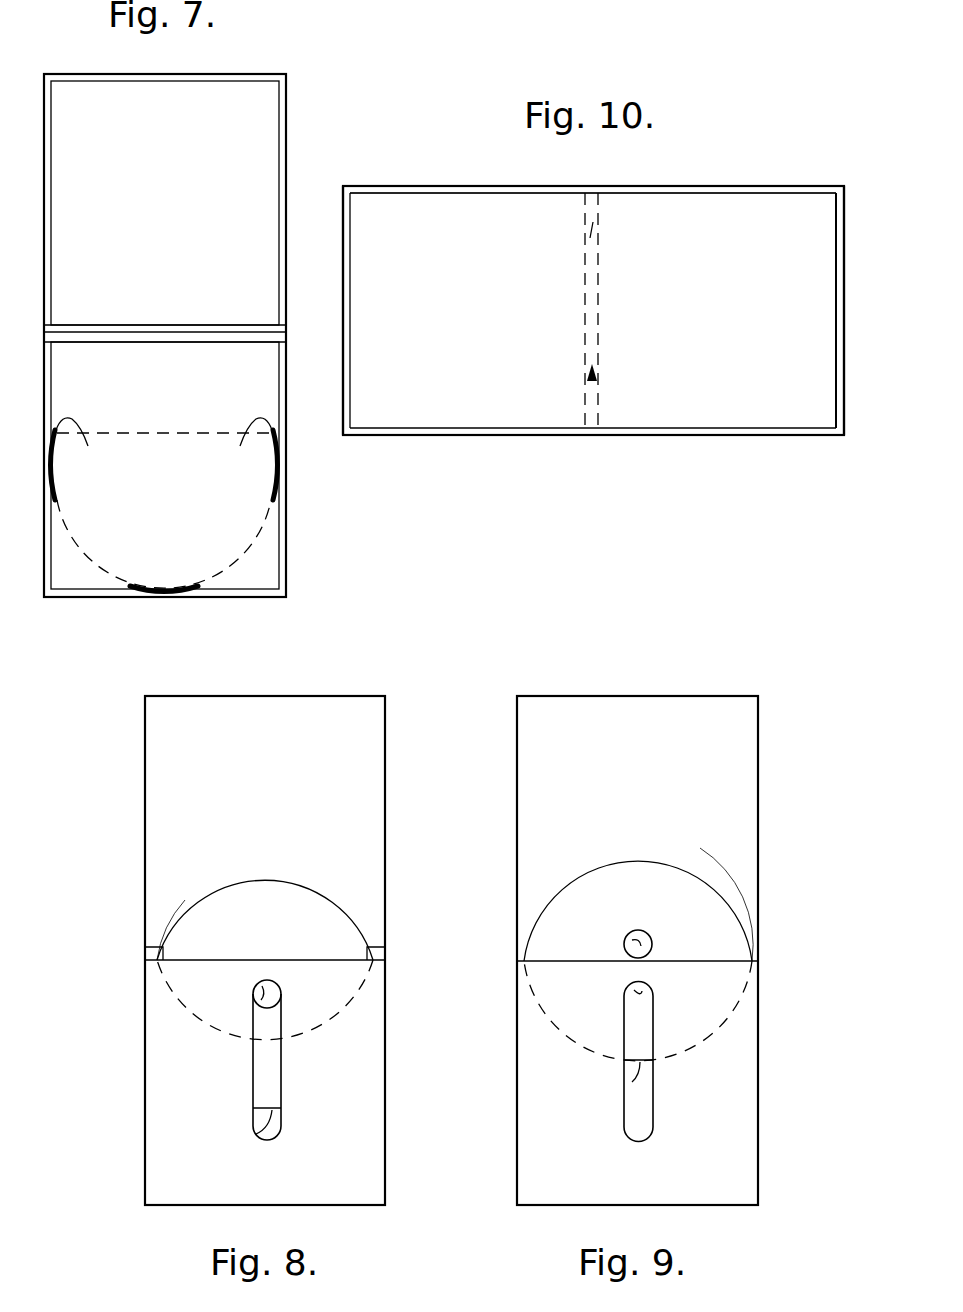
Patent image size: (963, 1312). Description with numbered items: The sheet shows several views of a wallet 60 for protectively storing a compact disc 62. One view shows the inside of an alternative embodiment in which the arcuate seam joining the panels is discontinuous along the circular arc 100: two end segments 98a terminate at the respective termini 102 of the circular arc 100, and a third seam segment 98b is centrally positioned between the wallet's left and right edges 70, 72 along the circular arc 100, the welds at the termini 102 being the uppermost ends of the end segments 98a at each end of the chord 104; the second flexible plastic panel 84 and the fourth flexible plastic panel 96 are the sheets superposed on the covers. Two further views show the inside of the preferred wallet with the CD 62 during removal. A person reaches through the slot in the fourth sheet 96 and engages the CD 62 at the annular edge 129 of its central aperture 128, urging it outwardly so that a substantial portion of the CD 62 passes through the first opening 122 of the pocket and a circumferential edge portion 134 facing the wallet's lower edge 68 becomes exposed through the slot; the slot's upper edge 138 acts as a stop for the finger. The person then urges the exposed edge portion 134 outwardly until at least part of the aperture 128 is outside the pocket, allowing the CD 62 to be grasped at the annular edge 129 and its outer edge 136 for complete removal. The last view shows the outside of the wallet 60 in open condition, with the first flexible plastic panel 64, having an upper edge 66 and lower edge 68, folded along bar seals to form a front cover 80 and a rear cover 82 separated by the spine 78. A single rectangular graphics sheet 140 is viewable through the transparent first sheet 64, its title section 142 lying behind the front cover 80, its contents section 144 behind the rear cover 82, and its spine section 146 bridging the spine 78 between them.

In FIG. 10, the wallet 60 is at (424, 184).
In FIG. 8, the wallet 60 is at (137, 751).
In FIG. 9, the wallet 60 is at (504, 764).
In FIG. 8, the compact disc 62 is at (322, 887).
In FIG. 9, the compact disc 62 is at (586, 839).
In FIG. 10, the first flexible plastic panel 64 is at (696, 182).
In FIG. 10, the upper edge 66 is at (846, 340).
In FIG. 10, the lower edge 68 is at (343, 324).
In FIG. 8, the lower edge 68 is at (165, 1206).
In FIG. 9, the lower edge 68 is at (718, 1207).
In FIG. 7, the left edge 70 is at (44, 538).
In FIG. 10, the left edge 70 is at (372, 185).
In FIG. 7, the right edge 72 is at (288, 578).
In FIG. 10, the right edge 72 is at (432, 436).
In FIG. 10, the spine 78 is at (596, 380).
In FIG. 10, the front cover 80 is at (729, 364).
In FIG. 10, the rear cover 82 is at (538, 407).
In FIG. 7, the second flexible plastic panel 84 is at (181, 207).
In FIG. 7, the fourth flexible plastic panel 96 is at (181, 376).
In FIG. 7, the end segments of arcuate seam 98a is at (58, 485).
In FIG. 7, the third seam segment 98b is at (165, 584).
In FIG. 7, the circular arc 100 is at (84, 547).
In FIG. 7, the termini of the circular arc 102 is at (86, 443).
In FIG. 7, the chord 104 is at (117, 432).
In FIG. 8, the first opening of the pocket 122 is at (183, 960).
In FIG. 8, the central aperture 128 is at (281, 999).
In FIG. 9, the central aperture 128 is at (652, 940).
In FIG. 8, the annular edge 129 is at (258, 997).
In FIG. 9, the annular edge 129 is at (626, 939).
In FIG. 8, the circumferential edge portion 134 is at (258, 1130).
In FIG. 9, the circumferential edge portion 134 is at (637, 1080).
In FIG. 9, the outer edge 136 is at (700, 848).
In FIG. 9, the upper edge of the slot 138 is at (640, 997).
In FIG. 10, the graphics sheet 140 is at (750, 186).
In FIG. 10, the title section 142 is at (823, 256).
In FIG. 10, the contents section 144 is at (523, 213).
In FIG. 10, the spine section 146 is at (597, 231).